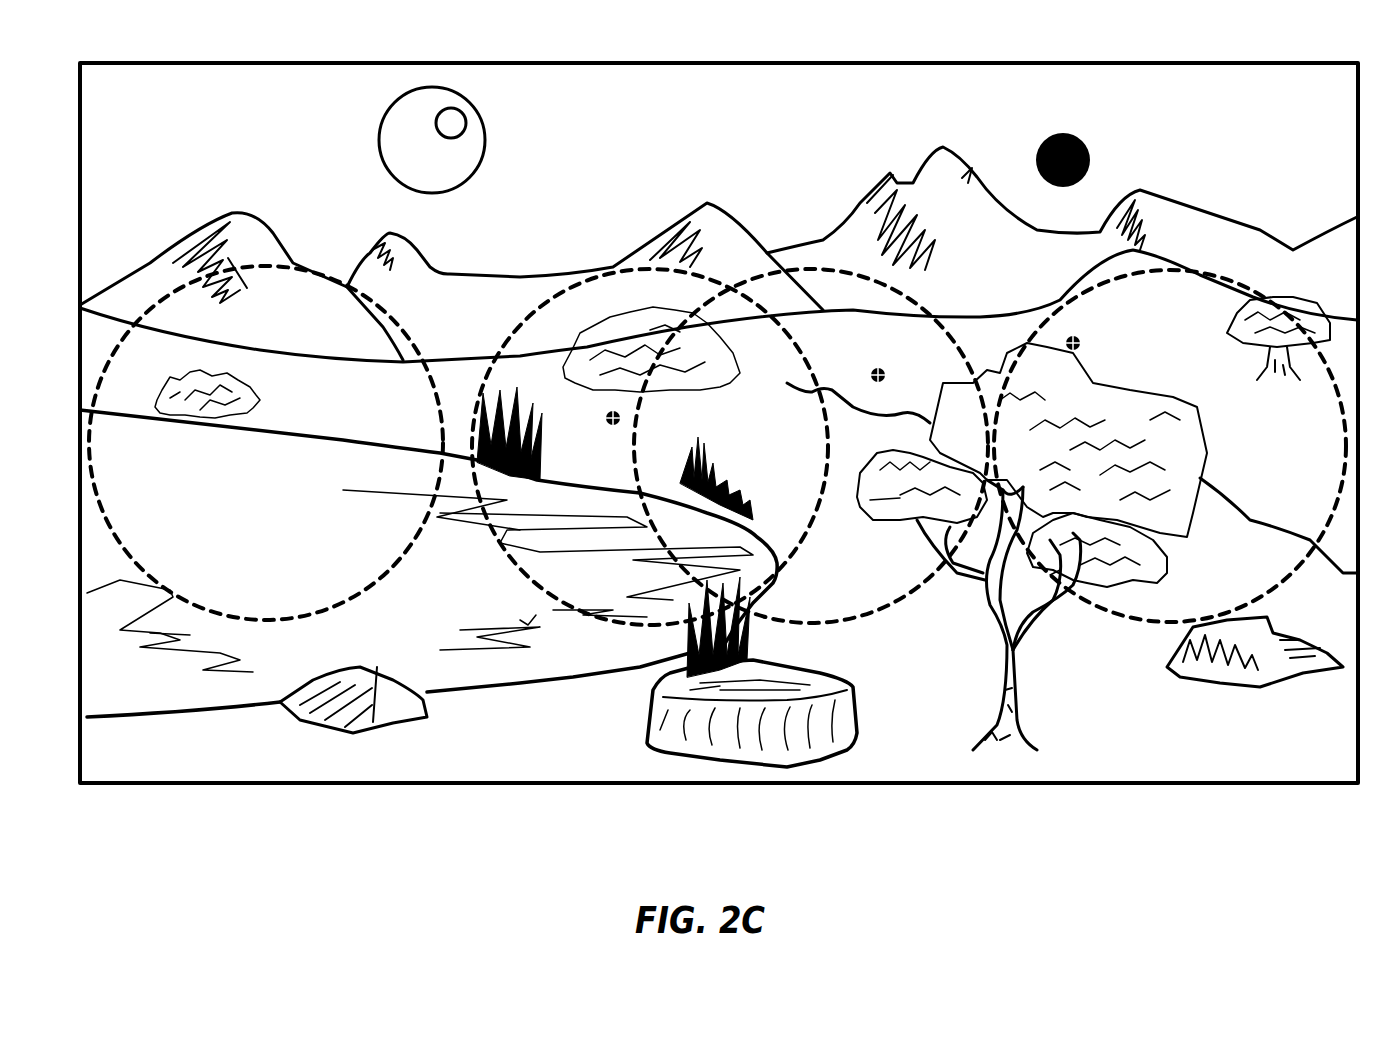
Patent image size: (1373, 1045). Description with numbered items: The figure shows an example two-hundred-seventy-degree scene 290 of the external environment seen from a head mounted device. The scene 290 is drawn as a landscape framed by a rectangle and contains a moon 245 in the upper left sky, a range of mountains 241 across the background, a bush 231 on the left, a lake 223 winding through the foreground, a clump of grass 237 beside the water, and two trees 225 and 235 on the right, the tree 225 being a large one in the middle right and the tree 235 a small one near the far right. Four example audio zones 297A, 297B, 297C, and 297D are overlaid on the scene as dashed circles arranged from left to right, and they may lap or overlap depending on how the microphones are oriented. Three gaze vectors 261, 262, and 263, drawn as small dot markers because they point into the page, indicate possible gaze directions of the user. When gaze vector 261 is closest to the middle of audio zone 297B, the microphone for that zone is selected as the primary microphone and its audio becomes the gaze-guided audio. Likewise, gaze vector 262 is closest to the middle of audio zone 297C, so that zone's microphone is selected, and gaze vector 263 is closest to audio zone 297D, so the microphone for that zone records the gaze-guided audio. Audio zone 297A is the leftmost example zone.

The scene 290 is at (1208, 63).
The moon 245 is at (452, 170).
The mountains 241 is at (297, 300).
The lake 223 is at (437, 608).
The bush 231 is at (263, 398).
The grass clump 237 is at (540, 442).
The gaze vector 261 is at (613, 423).
The gaze vector 262 is at (880, 373).
The gaze vector 263 is at (1080, 343).
The tree 225 is at (1207, 448).
The tree 235 is at (1305, 297).
The audio zone 297A is at (314, 617).
The audio zone 297B is at (500, 343).
The audio zone 297C is at (863, 620).
The audio zone 297D is at (1127, 622).